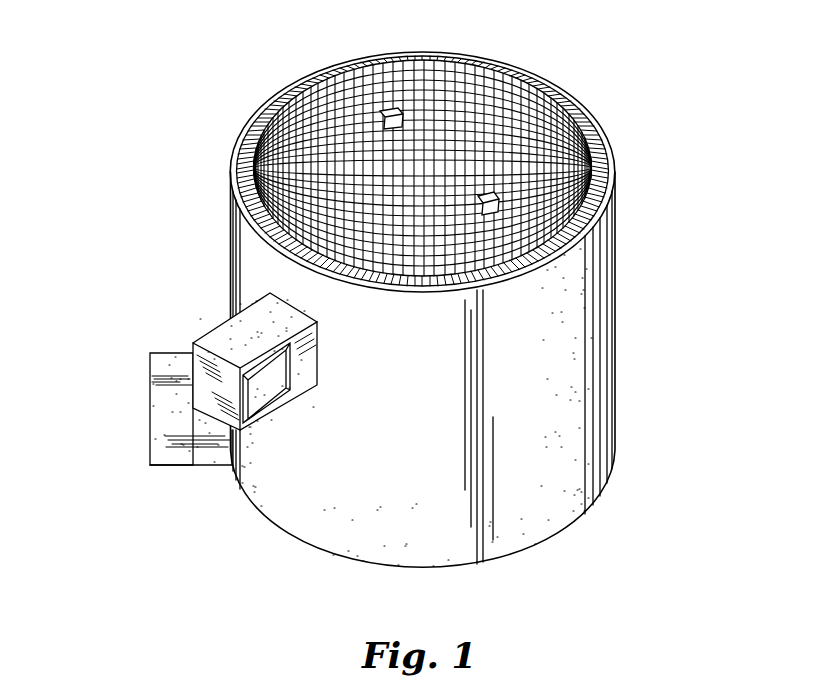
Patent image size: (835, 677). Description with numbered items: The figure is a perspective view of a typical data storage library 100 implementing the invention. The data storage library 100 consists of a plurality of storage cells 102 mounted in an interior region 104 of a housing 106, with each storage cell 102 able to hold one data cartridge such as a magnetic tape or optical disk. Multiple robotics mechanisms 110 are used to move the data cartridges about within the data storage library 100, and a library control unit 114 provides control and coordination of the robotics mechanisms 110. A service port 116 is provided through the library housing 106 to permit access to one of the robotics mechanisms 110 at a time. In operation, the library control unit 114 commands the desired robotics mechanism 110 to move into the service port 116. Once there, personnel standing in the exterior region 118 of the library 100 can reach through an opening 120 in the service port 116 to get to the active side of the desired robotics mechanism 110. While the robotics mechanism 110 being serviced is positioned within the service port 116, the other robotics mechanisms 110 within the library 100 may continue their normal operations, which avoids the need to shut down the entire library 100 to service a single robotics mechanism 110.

The data storage library 100 is at (627, 296).
The storage cell 102 is at (497, 72).
The interior region 104 is at (530, 132).
The housing 106 is at (587, 248).
The robotics mechanism 110 is at (392, 111).
The library control unit 114 is at (180, 413).
The service port 116 is at (274, 361).
The exterior region 118 is at (140, 248).
The opening 120 is at (296, 380).